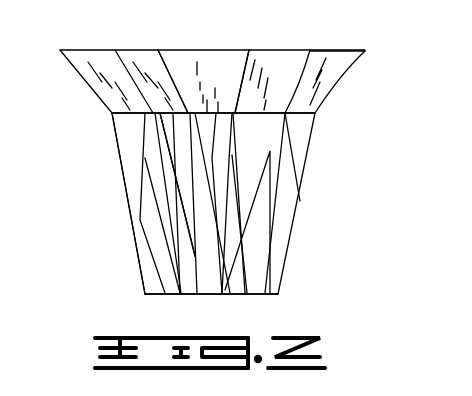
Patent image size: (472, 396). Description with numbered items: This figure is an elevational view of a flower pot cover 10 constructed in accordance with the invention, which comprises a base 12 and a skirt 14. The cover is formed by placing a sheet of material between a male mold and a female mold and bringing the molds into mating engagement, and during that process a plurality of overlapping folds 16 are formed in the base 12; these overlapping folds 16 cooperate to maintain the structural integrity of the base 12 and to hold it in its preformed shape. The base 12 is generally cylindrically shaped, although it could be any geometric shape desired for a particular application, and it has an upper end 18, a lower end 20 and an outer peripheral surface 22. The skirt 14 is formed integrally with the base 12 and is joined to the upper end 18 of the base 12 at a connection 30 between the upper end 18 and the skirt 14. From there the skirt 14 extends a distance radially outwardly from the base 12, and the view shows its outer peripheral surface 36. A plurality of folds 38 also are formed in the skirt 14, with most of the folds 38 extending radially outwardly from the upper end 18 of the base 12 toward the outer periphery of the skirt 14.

The flower pot cover 10 is at (333, 136).
The base 12 is at (277, 235).
The skirt 14 is at (330, 92).
The overlapping folds 16 is at (173, 245).
The upper end 18 is at (112, 114).
The lower end 20 is at (143, 294).
The outer peripheral surface 22 is at (127, 197).
The connection 30 is at (257, 118).
The outer peripheral surface 36 is at (353, 70).
The folds 38 is at (176, 82).